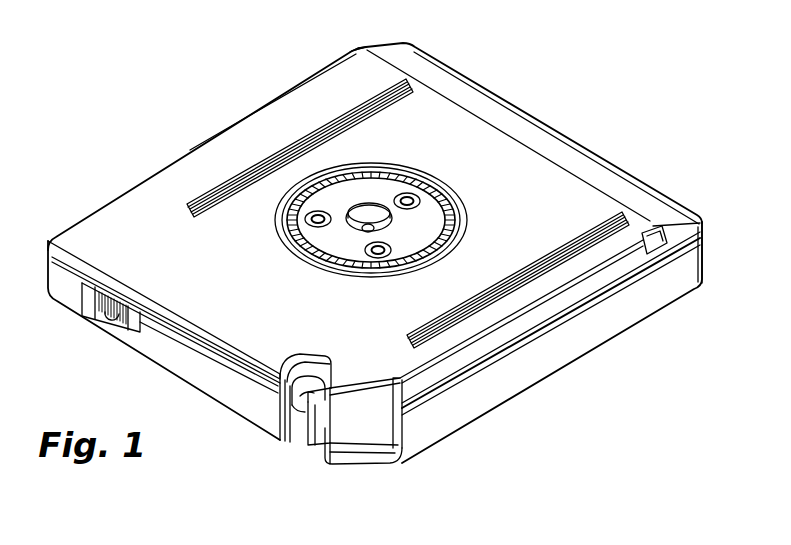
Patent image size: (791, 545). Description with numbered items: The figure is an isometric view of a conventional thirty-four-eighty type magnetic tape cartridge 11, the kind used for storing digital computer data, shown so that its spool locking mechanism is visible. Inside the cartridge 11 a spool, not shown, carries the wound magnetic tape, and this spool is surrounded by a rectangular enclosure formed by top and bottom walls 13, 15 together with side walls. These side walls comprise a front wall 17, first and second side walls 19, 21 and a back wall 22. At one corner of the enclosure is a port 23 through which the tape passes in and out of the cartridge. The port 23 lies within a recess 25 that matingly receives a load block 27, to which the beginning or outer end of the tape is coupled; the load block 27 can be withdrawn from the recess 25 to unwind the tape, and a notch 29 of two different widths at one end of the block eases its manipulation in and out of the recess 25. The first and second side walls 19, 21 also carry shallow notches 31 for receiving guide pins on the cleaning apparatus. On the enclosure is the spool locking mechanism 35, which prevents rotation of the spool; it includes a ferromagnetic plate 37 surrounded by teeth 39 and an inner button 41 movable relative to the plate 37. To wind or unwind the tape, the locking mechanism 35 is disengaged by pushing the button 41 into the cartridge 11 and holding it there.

The tape cartridge 11 is at (205, 136).
The top wall 13 is at (545, 384).
The bottom wall 15 is at (522, 150).
The front wall 17 is at (206, 384).
The first side wall 19 is at (605, 325).
The second side wall 21 is at (264, 101).
The back wall 22 is at (614, 171).
The port 23 is at (316, 372).
The recess 25 is at (368, 452).
The load block 27 is at (322, 432).
The notch 29 is at (305, 398).
The shallow notches 31 is at (348, 54).
The spool locking mechanism 35 is at (280, 250).
The ferromagnetic plate 37 is at (362, 188).
The teeth 39 is at (455, 221).
The inner button 41 is at (384, 229).